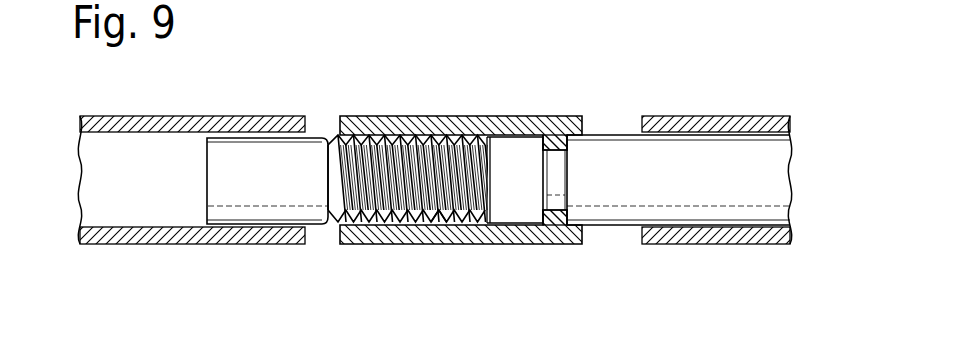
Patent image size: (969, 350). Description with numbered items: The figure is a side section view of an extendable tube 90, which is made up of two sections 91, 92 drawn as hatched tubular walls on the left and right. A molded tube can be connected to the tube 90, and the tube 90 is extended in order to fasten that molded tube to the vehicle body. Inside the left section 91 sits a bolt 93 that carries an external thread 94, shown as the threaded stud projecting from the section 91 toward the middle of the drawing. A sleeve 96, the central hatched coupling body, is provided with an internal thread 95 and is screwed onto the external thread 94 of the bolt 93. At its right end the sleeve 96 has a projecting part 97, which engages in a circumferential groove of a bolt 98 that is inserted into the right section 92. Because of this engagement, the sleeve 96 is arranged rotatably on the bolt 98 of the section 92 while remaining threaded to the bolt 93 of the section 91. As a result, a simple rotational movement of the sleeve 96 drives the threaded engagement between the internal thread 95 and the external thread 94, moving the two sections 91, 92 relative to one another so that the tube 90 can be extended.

The extendable tube 90 is at (290, 104).
The section 91 is at (167, 232).
The section 92 is at (718, 235).
The bolt 93 is at (266, 193).
The external thread 94 is at (376, 215).
The internal thread 95 is at (440, 215).
The sleeve 96 is at (473, 125).
The projecting part 97 is at (552, 230).
The bolt 98 is at (614, 155).